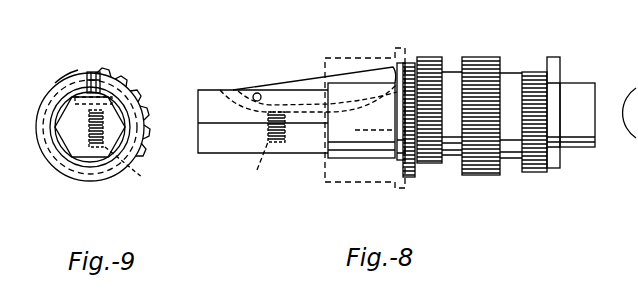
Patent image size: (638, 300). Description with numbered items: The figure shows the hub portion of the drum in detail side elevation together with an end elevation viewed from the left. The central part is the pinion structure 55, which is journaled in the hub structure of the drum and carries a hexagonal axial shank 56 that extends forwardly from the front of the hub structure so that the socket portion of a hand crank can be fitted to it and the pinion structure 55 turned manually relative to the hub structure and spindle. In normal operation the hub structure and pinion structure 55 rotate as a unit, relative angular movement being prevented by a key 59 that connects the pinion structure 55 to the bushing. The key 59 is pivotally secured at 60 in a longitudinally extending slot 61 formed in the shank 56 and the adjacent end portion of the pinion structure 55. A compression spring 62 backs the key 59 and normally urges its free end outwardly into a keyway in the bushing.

In FIG. 9, the pinion structure 55 is at (78, 183).
In FIG. 8, the pinion structure 55 is at (452, 163).
In FIG. 9, the hexagonal axial shank 56 is at (78, 137).
In FIG. 8, the hexagonal axial shank 56 is at (212, 148).
In FIG. 9, the key 59 is at (96, 76).
In FIG. 8, the key 59 is at (352, 77).
In FIG. 9, the pivot 60 is at (75, 99).
In FIG. 8, the pivot 60 is at (256, 93).
In FIG. 9, the longitudinally extending slot 61 is at (112, 101).
In FIG. 8, the longitudinally extending slot 61 is at (360, 108).
In FIG. 9, the compression spring 62 is at (105, 140).
In FIG. 8, the compression spring 62 is at (252, 167).